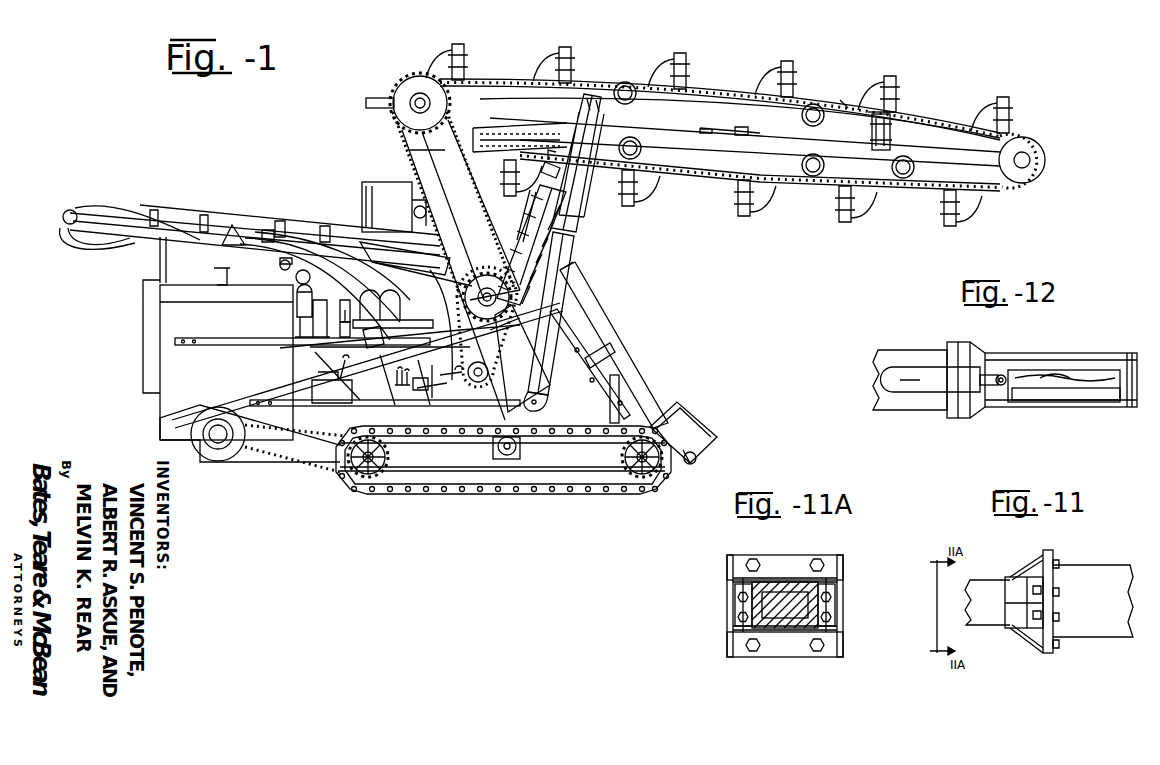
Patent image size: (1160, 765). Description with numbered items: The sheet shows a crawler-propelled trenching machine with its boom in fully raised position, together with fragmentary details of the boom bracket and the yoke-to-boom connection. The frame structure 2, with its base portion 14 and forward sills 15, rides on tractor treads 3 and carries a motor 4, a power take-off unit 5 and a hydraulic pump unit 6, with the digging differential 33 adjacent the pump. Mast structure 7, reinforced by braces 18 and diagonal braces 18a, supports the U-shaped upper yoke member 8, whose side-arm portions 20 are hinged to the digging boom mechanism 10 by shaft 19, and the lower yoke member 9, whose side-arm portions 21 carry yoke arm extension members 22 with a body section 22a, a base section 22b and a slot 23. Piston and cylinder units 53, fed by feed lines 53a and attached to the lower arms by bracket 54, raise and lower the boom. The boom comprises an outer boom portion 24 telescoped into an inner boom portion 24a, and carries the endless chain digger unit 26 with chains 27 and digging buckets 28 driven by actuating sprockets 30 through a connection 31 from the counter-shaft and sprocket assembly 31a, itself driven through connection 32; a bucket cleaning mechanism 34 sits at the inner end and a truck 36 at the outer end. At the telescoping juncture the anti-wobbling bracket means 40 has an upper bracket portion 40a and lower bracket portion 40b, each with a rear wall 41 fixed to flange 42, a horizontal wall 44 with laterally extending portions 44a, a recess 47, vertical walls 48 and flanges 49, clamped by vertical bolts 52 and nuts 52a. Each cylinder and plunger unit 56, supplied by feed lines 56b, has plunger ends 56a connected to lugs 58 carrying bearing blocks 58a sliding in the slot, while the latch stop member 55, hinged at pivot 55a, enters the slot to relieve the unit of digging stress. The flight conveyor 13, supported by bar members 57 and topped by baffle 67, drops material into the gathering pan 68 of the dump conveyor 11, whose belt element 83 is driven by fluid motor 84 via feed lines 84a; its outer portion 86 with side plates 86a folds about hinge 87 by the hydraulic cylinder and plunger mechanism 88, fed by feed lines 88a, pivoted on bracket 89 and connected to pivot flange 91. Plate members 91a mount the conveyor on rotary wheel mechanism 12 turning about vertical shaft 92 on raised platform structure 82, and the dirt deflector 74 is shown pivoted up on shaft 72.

In FIG. 1, the frame structure 2 is at (588, 440).
In FIG. 1, the tractor treads 3 is at (668, 478).
In FIG. 1, the motor 4 is at (168, 408).
In FIG. 1, the power take-off unit 5 is at (343, 405).
In FIG. 1, the hydraulic pump unit 6 is at (430, 365).
In FIG. 1, the mast structure 7 is at (506, 362).
In FIG. 1, the upper yoke member 8 is at (422, 152).
In FIG. 1, the lower yoke member 9 is at (566, 258).
In FIG. 12, the lower yoke member 9 is at (920, 410).
In FIG. 1, the digging boom mechanism 10 is at (487, 100).
In FIG. 1, the dump conveyor 11 is at (165, 215).
In FIG. 1, the rotary wheel mechanism 12 is at (355, 292).
In FIG. 1, the flight conveyor 13 is at (618, 340).
In FIG. 1, the base portion 14 is at (562, 445).
In FIG. 1, the sills 15 is at (245, 458).
In FIG. 1, the braces 18 is at (235, 346).
In FIG. 1, the diagonal braces 18a is at (260, 397).
In FIG. 1, the shaft 19 is at (410, 108).
In FIG. 1, the side-arm portions 20 is at (452, 180).
In FIG. 1, the side-arm portions 21 is at (542, 387).
In FIG. 12, the side-arm portions 21 is at (895, 348).
In FIG. 1, the yoke arm extension member 22 is at (578, 127).
In FIG. 12, the yoke arm extension member 22 is at (1108, 404).
In FIG. 1, the body section 22a is at (582, 138).
In FIG. 12, the body section 22a is at (1097, 352).
In FIG. 1, the base section 22b is at (606, 172).
In FIG. 12, the base section 22b is at (968, 344).
In FIG. 1, the slot 23 is at (603, 99).
In FIG. 12, the slot 23 is at (1052, 368).
In FIG. 1, the outer boom portion 24 is at (940, 146).
In FIG. 11A, the outer boom portion 24 is at (788, 584).
In FIG. 11, the outer boom portion 24 is at (980, 578).
In FIG. 1, the inner boom portion 24a is at (698, 102).
In FIG. 11, the inner boom portion 24a is at (1100, 566).
In FIG. 1, the endless chain digger unit 26 is at (834, 100).
In FIG. 1, the chains 27 is at (920, 126).
In FIG. 1, the digging buckets 28 is at (800, 72).
In FIG. 1, the actuating sprockets 30 is at (405, 80).
In FIG. 1, the connection 31 is at (472, 190).
In FIG. 1, the counter-shaft and sprocket assembly 31a is at (500, 297).
In FIG. 1, the connection 32 is at (520, 318).
In FIG. 1, the digging differential 33 is at (468, 375).
In FIG. 1, the bucket cleaning mechanism 34 is at (372, 97).
In FIG. 1, the truck 36 is at (1046, 158).
In FIG. 1, the anti-wobbling bracket means 40 is at (862, 133).
In FIG. 11A, the anti-wobbling bracket means 40 is at (847, 590).
In FIG. 11, the anti-wobbling bracket means 40 is at (1055, 554).
In FIG. 11A, the upper bracket portion 40a is at (820, 558).
In FIG. 11A, the lower bracket portion 40b is at (785, 658).
In FIG. 11A, the rear wall 41 is at (765, 556).
In FIG. 11, the rear wall 41 is at (1048, 552).
In FIG. 1, the flange 42 is at (848, 112).
In FIG. 11, the flange 42 is at (1054, 650).
In FIG. 11A, the horizontal wall 44 is at (840, 560).
In FIG. 11A, the laterally extending portions 44a is at (740, 560).
In FIG. 11, the laterally extending portions 44a is at (1016, 574).
In FIG. 11A, the recess 47 is at (770, 584).
In FIG. 11A, the vertical walls 48 is at (733, 582).
In FIG. 11, the vertical walls 48 is at (1010, 610).
In FIG. 11A, the flanges 49 is at (728, 560).
In FIG. 11, the flanges 49 is at (1020, 558).
In FIG. 11A, the vertical bolts 52 is at (732, 600).
In FIG. 11, the vertical bolts 52 is at (1030, 600).
In FIG. 11A, the nuts 52a is at (845, 645).
In FIG. 1, the piston and cylinder units 53 is at (530, 215).
In FIG. 1, the feed lines 53a is at (522, 218).
In FIG. 1, the bracket 54 is at (550, 176).
In FIG. 1, the latch stop member 55 is at (602, 130).
In FIG. 12, the latch stop member 55 is at (1072, 396).
In FIG. 12, the pivot 55a is at (1062, 372).
In FIG. 1, the cylinder and plunger unit 56 is at (578, 214).
In FIG. 12, the cylinder and plunger unit 56 is at (922, 348).
In FIG. 1, the plunger ends 56a is at (591, 118).
In FIG. 12, the plunger ends 56a is at (1000, 366).
In FIG. 1, the feed lines 56b is at (572, 266).
In FIG. 1, the bar members 57 is at (412, 222).
In FIG. 12, the lugs 58 is at (996, 388).
In FIG. 12, the bearing blocks 58a is at (1004, 388).
In FIG. 1, the baffle 67 is at (387, 207).
In FIG. 1, the gathering pan 68 is at (416, 259).
In FIG. 1, the shaft 72 is at (697, 460).
In FIG. 1, the dirt deflector 74 is at (705, 422).
In FIG. 1, the raised platform structure 82 is at (348, 323).
In FIG. 1, the belt element 83 is at (120, 212).
In FIG. 1, the fluid motor 84 is at (62, 215).
In FIG. 1, the feed lines 84a is at (100, 210).
In FIG. 1, the outer portion 86 is at (112, 216).
In FIG. 1, the side plates 86a is at (235, 226).
In FIG. 1, the hinge 87 is at (268, 228).
In FIG. 1, the hydraulic cylinder and plunger mechanism 88 is at (285, 232).
In FIG. 1, the feed lines 88a is at (332, 238).
In FIG. 1, the bracket 89 is at (315, 268).
In FIG. 1, the pivot flange 91 is at (232, 248).
In FIG. 1, the plate members 91a is at (371, 311).
In FIG. 1, the vertical shaft 92 is at (365, 318).